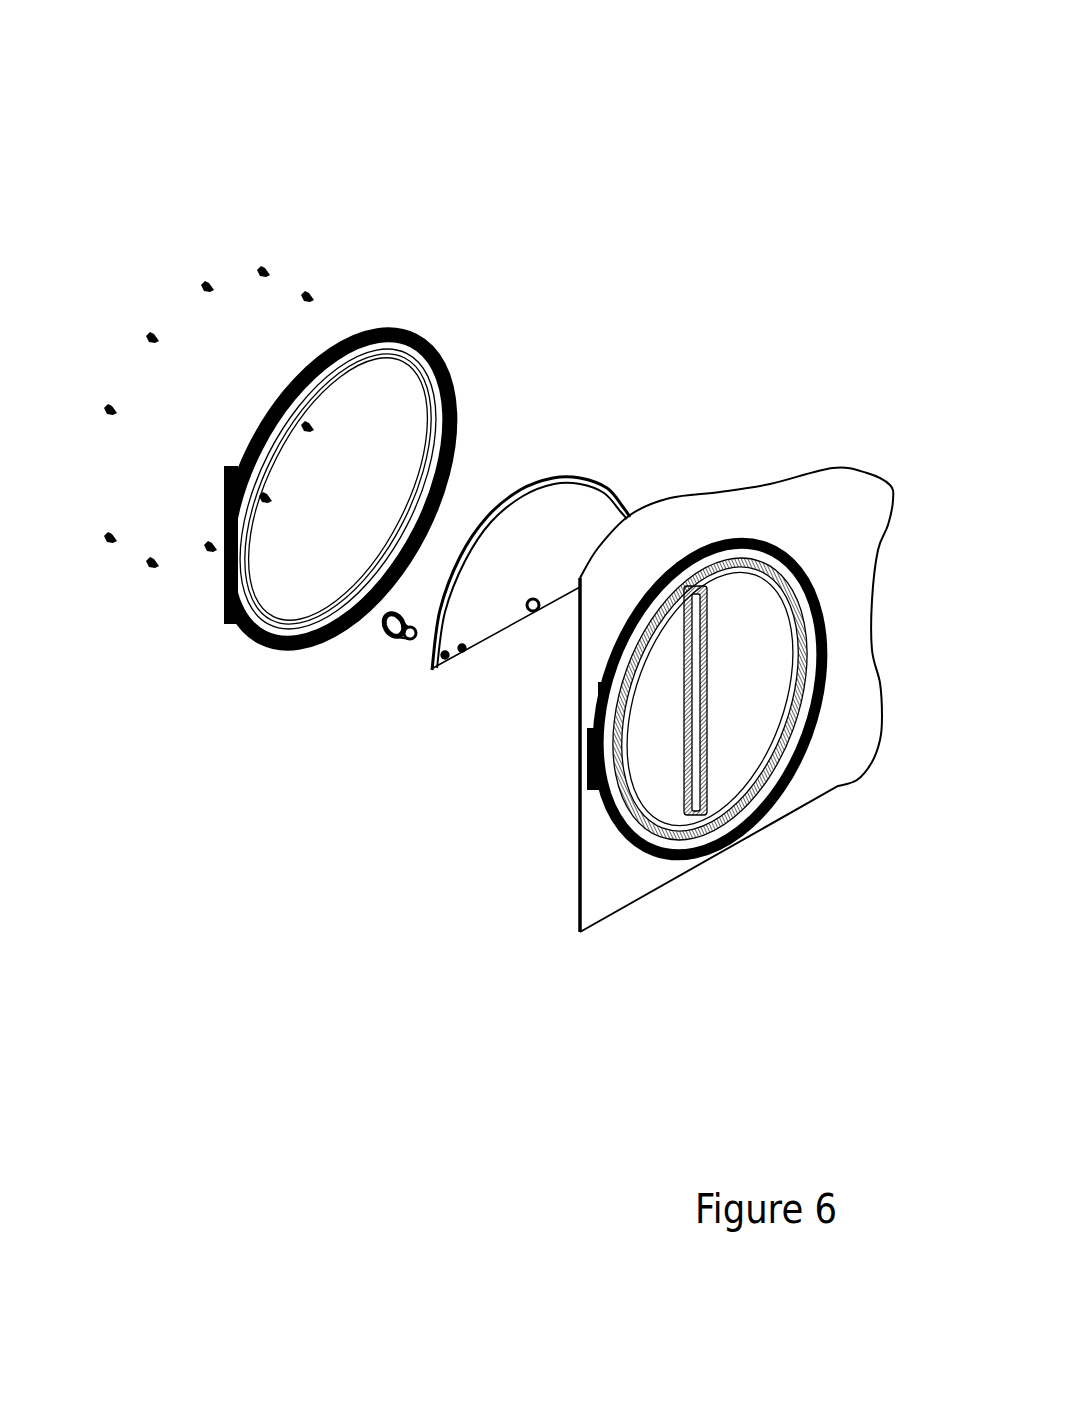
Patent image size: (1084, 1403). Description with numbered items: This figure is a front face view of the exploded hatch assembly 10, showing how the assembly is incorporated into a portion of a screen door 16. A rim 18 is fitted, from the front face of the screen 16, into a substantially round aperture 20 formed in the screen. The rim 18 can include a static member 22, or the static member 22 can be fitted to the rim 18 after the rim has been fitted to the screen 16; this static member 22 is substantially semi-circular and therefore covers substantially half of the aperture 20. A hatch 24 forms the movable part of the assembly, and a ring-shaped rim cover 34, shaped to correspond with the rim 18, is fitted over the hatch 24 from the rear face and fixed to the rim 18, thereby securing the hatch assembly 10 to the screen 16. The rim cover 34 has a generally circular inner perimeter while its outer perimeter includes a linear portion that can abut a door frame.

The hatch assembly 10 is at (387, 148).
The screen door 16 is at (768, 500).
The rim 18 is at (797, 718).
The aperture 20 is at (645, 740).
The static member 22 is at (743, 712).
The hatch 24 is at (559, 513).
The rim cover 34 is at (414, 330).